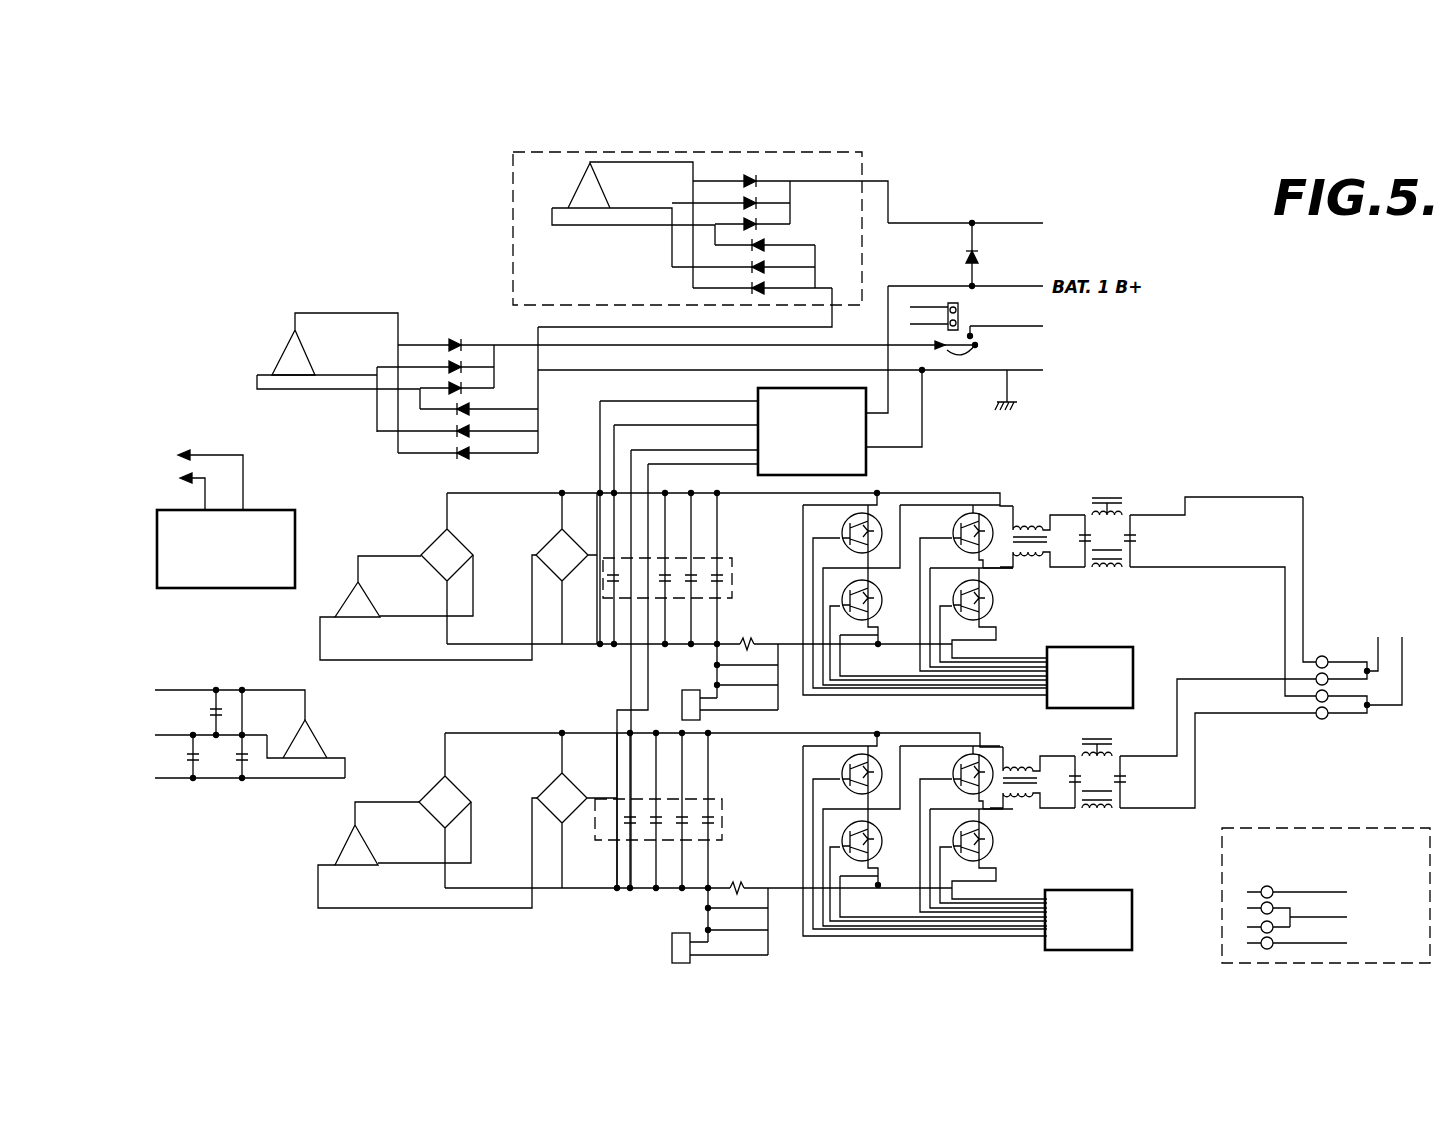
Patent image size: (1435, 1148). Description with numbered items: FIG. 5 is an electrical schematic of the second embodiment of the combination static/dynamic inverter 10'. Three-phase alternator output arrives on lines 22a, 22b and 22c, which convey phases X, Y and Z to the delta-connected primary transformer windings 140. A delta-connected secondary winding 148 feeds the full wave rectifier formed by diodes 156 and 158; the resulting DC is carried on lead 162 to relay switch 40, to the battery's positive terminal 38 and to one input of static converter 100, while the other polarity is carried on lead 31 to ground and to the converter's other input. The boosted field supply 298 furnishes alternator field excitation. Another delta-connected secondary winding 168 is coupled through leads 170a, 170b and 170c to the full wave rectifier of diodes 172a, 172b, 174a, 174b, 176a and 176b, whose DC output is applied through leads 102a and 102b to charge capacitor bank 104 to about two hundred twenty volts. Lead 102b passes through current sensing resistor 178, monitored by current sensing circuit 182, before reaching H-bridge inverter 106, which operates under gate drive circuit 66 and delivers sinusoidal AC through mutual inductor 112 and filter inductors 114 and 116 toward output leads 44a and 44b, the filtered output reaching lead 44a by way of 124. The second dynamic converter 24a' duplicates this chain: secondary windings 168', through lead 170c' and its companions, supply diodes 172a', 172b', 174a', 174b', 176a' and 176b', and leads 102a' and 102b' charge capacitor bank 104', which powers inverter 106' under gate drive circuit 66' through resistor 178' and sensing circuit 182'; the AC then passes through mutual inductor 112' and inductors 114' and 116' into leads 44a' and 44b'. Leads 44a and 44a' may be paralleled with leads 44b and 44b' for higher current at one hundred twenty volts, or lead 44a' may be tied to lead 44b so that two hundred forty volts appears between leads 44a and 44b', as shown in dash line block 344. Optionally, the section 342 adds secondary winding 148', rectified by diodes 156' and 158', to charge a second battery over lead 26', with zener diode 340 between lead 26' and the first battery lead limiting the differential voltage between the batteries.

The combination static/dynamic inverter 10' is at (214, 921).
The line 22a is at (176, 690).
The line 22b is at (178, 740).
The line 22c is at (222, 780).
The second dynamic converter 24a' is at (149, 884).
The lead 26' is at (1015, 205).
The lead 31 is at (938, 371).
The positive terminal 38 is at (975, 324).
The relay switch 40 is at (980, 348).
The lead 44a is at (1289, 697).
The lead 44b is at (1266, 755).
The lead 44a' is at (1233, 782).
The lead 44b' is at (1233, 837).
The gate drive circuit 66 is at (1116, 667).
The gate drive circuit 66' is at (1055, 932).
The static converter 100 is at (866, 465).
The lead 102a is at (730, 644).
The lead 102b is at (699, 595).
The lead 102a' is at (724, 837).
The lead 102b' is at (698, 913).
The capacitor bank 104 is at (698, 578).
The capacitor bank 104' is at (690, 819).
The H-bridge inverter 106 is at (925, 612).
The inverter 106' is at (925, 853).
The mutual inductor 112 is at (1059, 521).
The mutual inductor 112' is at (1054, 762).
The inductor 114 is at (1106, 480).
The inductor 114' is at (1124, 737).
The inductor 116 is at (1106, 591).
The inductor 116' is at (1100, 832).
The filter output line 124 is at (1155, 514).
The three-phase transformer windings 140 is at (318, 737).
The secondary transformer winding 148 is at (308, 376).
The secondary winding 148' is at (583, 219).
The diodes 156 is at (616, 357).
The diodes 156' is at (780, 202).
The diodes 158 is at (457, 414).
The diodes 158' is at (728, 268).
The lead 162 is at (597, 347).
The secondary winding 168 is at (338, 592).
The secondary windings 168' is at (337, 840).
The lead 170a is at (316, 652).
The lead 170b is at (356, 560).
The lead 170c is at (428, 607).
The lead 170c' is at (427, 853).
The diode 172a is at (548, 557).
The diode 172b is at (511, 589).
The diode 172a' is at (558, 799).
The diode 172b' is at (510, 832).
The diode 174a is at (419, 568).
The diode 174b is at (426, 585).
The diode 174a' is at (416, 810).
The diode 174b' is at (424, 832).
The diode 176a is at (481, 521).
The diode 176b is at (482, 613).
The diode 176a' is at (481, 767).
The diode 176b' is at (491, 855).
The current sensing resistor 178 is at (760, 631).
The current sensing resistor 178' is at (753, 872).
The current sensing circuit 182 is at (719, 682).
The current sensing circuit 182' is at (709, 925).
The boosted field supply 298 is at (224, 588).
The zener diode 340 is at (962, 257).
The second alternator rectifier section 342 is at (513, 240).
The dash line block 344 is at (1344, 820).